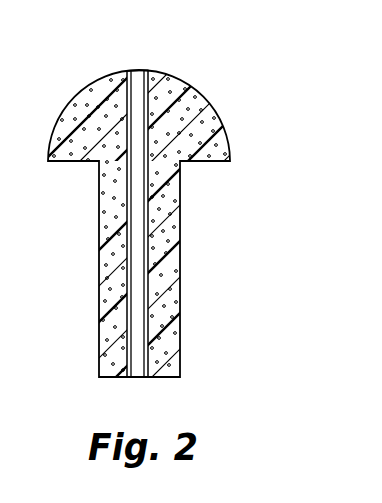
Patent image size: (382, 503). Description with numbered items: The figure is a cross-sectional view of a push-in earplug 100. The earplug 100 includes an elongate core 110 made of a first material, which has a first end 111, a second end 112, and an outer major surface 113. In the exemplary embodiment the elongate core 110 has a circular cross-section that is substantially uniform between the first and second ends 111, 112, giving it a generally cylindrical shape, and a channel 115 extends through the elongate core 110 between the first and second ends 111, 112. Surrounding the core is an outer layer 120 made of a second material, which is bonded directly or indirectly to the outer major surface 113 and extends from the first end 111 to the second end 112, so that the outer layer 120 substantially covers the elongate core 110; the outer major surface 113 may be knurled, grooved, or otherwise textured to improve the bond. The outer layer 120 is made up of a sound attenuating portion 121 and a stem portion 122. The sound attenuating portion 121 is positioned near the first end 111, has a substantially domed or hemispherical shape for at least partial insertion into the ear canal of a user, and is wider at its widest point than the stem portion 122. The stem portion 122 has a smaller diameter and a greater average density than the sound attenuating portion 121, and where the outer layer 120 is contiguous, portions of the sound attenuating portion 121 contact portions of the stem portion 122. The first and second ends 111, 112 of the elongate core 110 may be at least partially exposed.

The push-in earplug 100 is at (240, 44).
The elongate core 110 is at (160, 212).
The first end 111 is at (148, 70).
The second end 112 is at (145, 378).
The outer major surface 113 is at (150, 272).
The channel 115 is at (134, 70).
The outer layer 120 is at (224, 131).
The sound attenuating portion 121 is at (200, 100).
The stem portion 122 is at (105, 225).